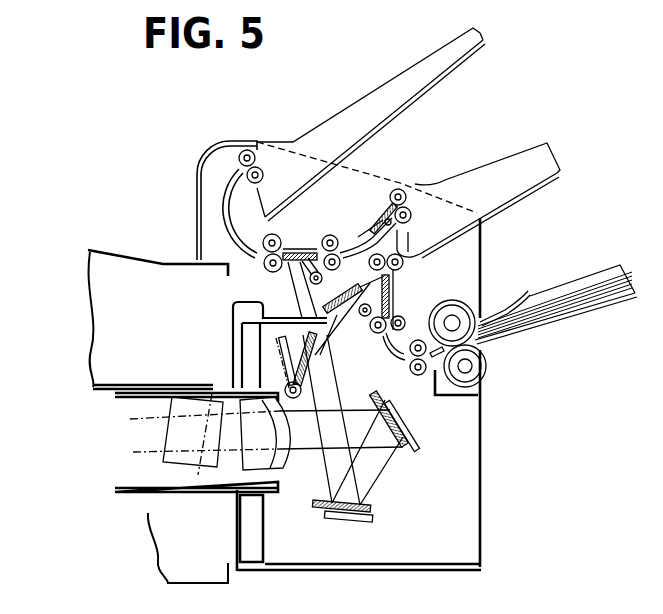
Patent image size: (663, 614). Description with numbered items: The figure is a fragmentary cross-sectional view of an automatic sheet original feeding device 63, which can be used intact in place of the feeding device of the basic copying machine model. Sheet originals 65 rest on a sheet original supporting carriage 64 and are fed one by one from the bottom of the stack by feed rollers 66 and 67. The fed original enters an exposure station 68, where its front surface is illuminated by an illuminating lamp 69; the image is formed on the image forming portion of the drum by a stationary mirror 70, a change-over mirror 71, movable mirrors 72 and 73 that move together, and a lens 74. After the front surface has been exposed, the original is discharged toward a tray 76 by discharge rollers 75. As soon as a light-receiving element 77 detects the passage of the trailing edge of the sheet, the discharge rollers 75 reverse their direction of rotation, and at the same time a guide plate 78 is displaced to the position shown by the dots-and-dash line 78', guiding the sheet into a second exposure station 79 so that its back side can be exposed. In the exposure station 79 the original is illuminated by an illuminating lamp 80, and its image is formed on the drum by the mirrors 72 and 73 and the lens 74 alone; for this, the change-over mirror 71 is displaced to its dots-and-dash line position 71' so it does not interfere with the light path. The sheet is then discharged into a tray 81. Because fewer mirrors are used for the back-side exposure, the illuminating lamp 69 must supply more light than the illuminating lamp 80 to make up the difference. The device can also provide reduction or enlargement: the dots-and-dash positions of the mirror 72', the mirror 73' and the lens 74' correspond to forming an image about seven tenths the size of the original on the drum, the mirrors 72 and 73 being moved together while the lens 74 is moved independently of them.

The automatic sheet original feeding device 63 is at (487, 437).
The sheet original supporting carriage 64 is at (588, 315).
The sheet originals 65 is at (597, 288).
The feed roller 66 is at (490, 366).
The feed roller 67 is at (440, 304).
The exposure station 68 is at (362, 248).
The illuminating lamp 69 is at (408, 352).
The stationary mirror 70 is at (340, 325).
The change-over mirror 71 is at (318, 365).
The change-over mirror displaced position 71' is at (294, 284).
The movable mirror 72 is at (332, 526).
The movable mirror reduction position 72' is at (384, 516).
The movable mirror 73 is at (394, 448).
The movable mirror reduction position 73' is at (425, 440).
The lens 74 is at (266, 460).
The lens reduction position 74' is at (193, 462).
The discharge rollers 75 is at (413, 216).
The tray 76 is at (537, 177).
The light-receiving element 77 is at (389, 194).
The guide plate 78 is at (370, 204).
The guide plate displaced position 78' is at (425, 255).
The exposure station 79 is at (282, 270).
The illuminating lamp 80 is at (310, 262).
The tray 81 is at (436, 66).